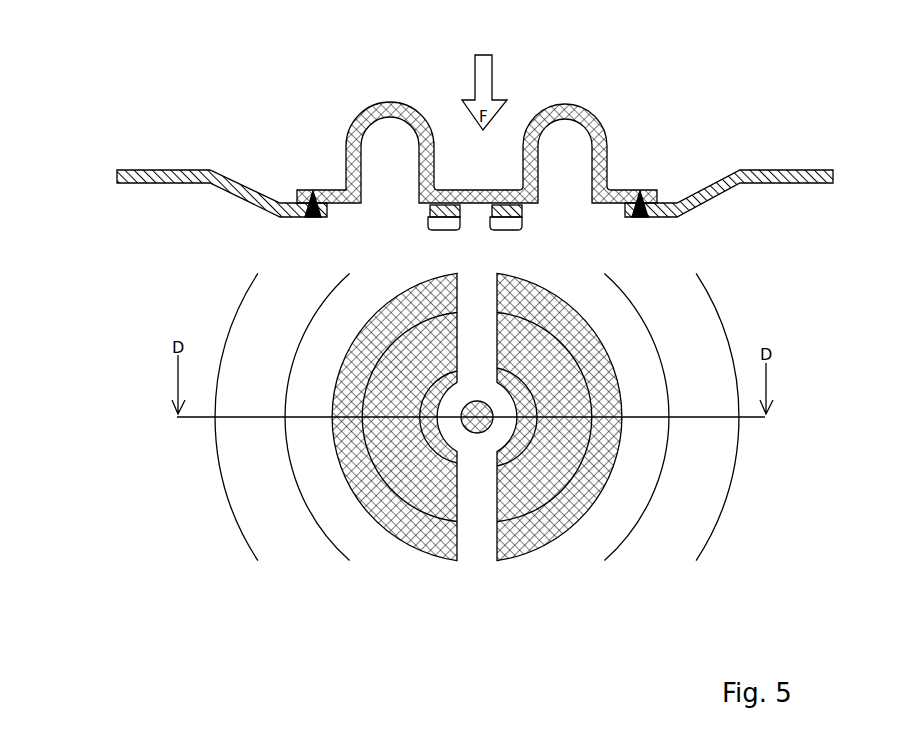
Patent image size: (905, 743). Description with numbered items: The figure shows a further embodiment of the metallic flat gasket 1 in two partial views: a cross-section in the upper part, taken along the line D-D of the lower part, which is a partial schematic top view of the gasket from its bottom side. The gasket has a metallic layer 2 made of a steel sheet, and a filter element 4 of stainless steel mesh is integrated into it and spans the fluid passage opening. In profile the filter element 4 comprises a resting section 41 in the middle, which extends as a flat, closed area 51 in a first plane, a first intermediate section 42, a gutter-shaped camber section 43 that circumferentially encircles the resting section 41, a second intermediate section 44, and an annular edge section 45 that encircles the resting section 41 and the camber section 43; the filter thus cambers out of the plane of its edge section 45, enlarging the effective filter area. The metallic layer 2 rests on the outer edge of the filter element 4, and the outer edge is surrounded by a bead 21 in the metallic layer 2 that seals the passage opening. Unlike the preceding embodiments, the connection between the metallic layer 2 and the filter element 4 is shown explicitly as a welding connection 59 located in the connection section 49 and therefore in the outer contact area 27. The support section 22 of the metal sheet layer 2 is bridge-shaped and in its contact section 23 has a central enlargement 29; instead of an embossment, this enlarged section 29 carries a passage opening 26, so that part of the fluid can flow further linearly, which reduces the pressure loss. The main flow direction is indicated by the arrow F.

The metallic flat gasket 1 is at (233, 155).
The metallic layer 2 is at (773, 173).
The filter element 4 is at (600, 138).
The bead 21 is at (243, 205).
The support section 22 is at (478, 513).
The contact section 23 is at (444, 230).
The passage opening 26 is at (478, 193).
The outer contact area 27 is at (322, 190).
The enlargement 29 is at (502, 403).
The resting section 41 is at (512, 190).
The first intermediate section 42 is at (541, 190).
The camber section 43 is at (567, 105).
The second intermediate section 44 is at (594, 122).
The edge section 45 is at (620, 190).
The connection section 49 is at (312, 192).
The closed area 51 is at (452, 190).
The welding connection 59 is at (300, 213).